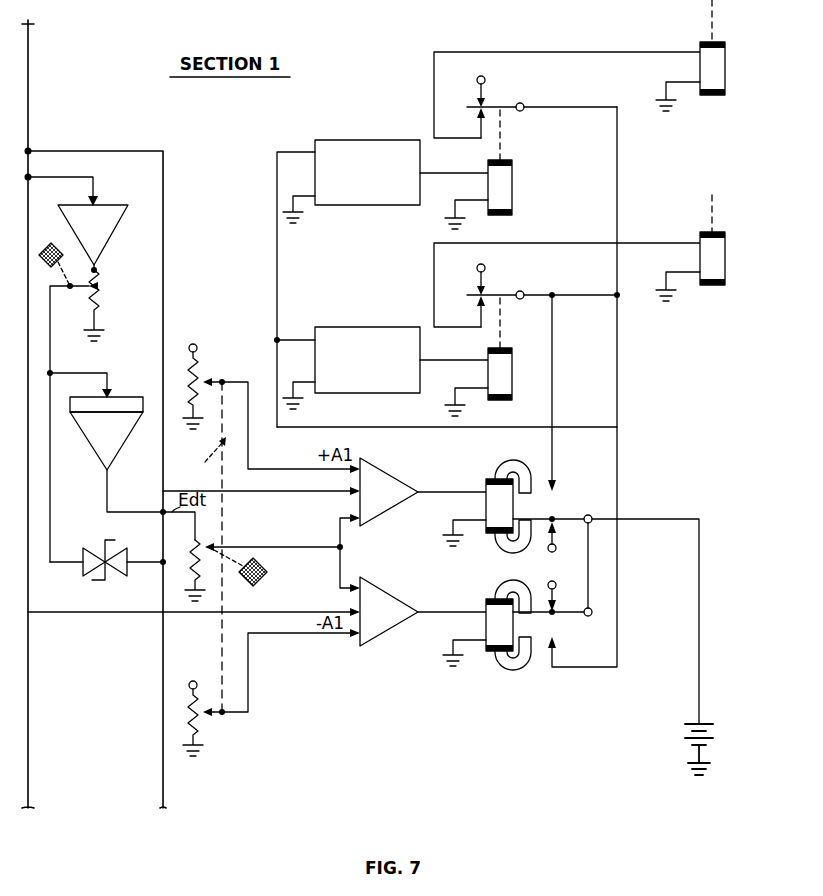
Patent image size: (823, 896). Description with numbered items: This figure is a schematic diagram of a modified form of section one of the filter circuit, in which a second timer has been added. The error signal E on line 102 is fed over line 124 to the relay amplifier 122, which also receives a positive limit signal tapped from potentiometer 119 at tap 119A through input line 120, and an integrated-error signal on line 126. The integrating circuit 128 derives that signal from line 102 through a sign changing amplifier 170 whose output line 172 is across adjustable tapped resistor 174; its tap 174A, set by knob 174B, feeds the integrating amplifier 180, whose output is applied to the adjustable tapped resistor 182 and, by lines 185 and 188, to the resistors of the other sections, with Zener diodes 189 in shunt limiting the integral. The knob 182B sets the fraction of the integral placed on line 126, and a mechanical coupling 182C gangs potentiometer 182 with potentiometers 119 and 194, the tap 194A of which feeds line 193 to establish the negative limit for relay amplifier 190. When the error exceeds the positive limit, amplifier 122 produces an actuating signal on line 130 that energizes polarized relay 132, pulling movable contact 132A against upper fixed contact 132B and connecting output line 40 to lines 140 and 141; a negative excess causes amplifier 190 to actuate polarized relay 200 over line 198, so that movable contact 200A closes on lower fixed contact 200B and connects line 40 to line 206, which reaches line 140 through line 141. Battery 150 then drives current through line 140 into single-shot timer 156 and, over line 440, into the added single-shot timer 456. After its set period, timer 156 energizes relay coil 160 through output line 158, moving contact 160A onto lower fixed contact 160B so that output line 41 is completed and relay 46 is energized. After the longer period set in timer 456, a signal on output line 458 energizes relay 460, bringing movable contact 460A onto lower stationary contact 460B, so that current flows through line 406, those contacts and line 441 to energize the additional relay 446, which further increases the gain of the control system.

The line 102 is at (30, 127).
The line 124 is at (133, 151).
The sign changing amplifier 170 is at (104, 205).
The output line 172 is at (96, 264).
The adjustable tapped resistor 174 is at (100, 294).
The tap 174A is at (60, 290).
The knob 174B is at (47, 243).
The integrating amplifier 180 is at (90, 452).
The integrating circuit 128 is at (152, 466).
The potentiometer 119 is at (200, 383).
The tap 119A is at (207, 380).
The mechanical coupling 182C is at (197, 547).
The input line 120 is at (258, 446).
The Zener diodes 189 is at (115, 548).
The line 188 is at (208, 540).
The adjustable tapped resistor 182 is at (210, 547).
The knob 182B is at (268, 572).
The line 126 is at (341, 531).
The line 185 is at (163, 750).
The tapped potentiometer 194 is at (206, 732).
The tap 194A is at (210, 720).
The line 193 is at (316, 633).
The single-shot timer 456 is at (382, 140).
The line 440 is at (290, 272).
The single-shot timer 156 is at (385, 327).
The line 140 is at (376, 427).
The output line 458 is at (456, 173).
The relay 460 is at (512, 186).
The movable contact 460A is at (510, 107).
The lower stationary contact 460B is at (476, 140).
The line 441 is at (552, 52).
The relay 446 is at (725, 62).
The line 406 is at (618, 188).
The output line 41 is at (552, 243).
The relay 46 is at (725, 262).
The movable contact 160A is at (510, 295).
The lower fixed contact 160B is at (477, 316).
The output line 158 is at (470, 360).
The relay energizing coil 160 is at (512, 378).
The line 141 is at (553, 374).
The line 206 is at (617, 382).
The relay amplifier 122 is at (392, 477).
The output line 130 is at (462, 492).
The polarized relay 132 is at (488, 479).
The movable contact 132A is at (562, 517).
The upper fixed contact 132B is at (556, 485).
The output line 40 is at (614, 513).
The relay amplifier 190 is at (386, 606).
The output line 198 is at (462, 612).
The polarized relay 200 is at (488, 599).
The movable contact 200A is at (560, 578).
The lower fixed contact 200B is at (553, 644).
The battery 150 is at (692, 734).